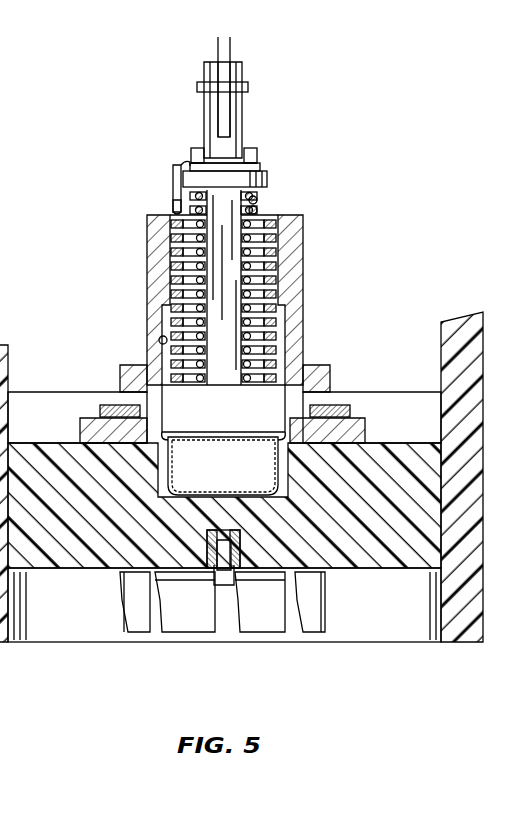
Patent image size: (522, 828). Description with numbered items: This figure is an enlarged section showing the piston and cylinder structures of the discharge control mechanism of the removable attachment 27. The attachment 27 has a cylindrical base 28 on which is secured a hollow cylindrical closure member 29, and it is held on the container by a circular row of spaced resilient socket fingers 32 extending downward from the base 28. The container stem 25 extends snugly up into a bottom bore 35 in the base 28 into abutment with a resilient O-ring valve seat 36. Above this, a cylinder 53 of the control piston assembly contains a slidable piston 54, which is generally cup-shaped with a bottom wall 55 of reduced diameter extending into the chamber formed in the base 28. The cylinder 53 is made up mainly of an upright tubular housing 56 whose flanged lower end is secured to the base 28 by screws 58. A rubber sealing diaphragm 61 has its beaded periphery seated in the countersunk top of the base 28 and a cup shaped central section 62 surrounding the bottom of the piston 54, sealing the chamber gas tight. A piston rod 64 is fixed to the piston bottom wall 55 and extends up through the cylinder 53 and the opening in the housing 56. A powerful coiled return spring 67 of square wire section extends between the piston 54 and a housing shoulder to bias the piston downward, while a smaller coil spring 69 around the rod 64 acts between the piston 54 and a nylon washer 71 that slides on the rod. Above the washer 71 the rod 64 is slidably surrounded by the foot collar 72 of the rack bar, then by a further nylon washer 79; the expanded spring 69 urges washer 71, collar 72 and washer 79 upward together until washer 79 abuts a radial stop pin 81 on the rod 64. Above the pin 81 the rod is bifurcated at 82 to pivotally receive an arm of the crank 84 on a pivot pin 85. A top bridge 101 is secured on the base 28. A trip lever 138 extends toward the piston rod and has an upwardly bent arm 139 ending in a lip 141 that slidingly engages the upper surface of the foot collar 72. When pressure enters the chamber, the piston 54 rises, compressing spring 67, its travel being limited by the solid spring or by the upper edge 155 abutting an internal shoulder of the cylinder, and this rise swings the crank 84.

The stem 25 is at (224, 585).
The attachment 27 is at (480, 353).
The cylindrical base 28 is at (55, 405).
The hollow cylindrical closure member 29 is at (470, 470).
The socket fingers 32 is at (305, 632).
The bottom bore 35 is at (260, 568).
The O-ring valve seat 36 is at (212, 540).
The cylinder 53 is at (160, 340).
The piston 54 is at (223, 408).
The bottom wall 55 is at (224, 463).
The tubular housing 56 is at (300, 305).
The screws 58 is at (355, 400).
The sealing diaphragm 61 is at (205, 500).
The cup shaped central section 62 is at (168, 490).
The piston rod 64 is at (238, 138).
The return spring 67 is at (280, 264).
The coil spring 69 is at (258, 204).
The nylon washer 71 is at (262, 184).
The foot collar 72 is at (267, 178).
The nylon washer 79 is at (265, 167).
The radial stop pin 81 is at (257, 152).
The bifurcated end 82 is at (225, 78).
The crank 84 is at (232, 48).
The pivot pin 85 is at (197, 87).
The top bridge 101 is at (318, 368).
The trip lever 138 is at (173, 206).
The upwardly bent arm 139 is at (173, 186).
The lip 141 is at (183, 162).
The upper edge 155 is at (165, 312).